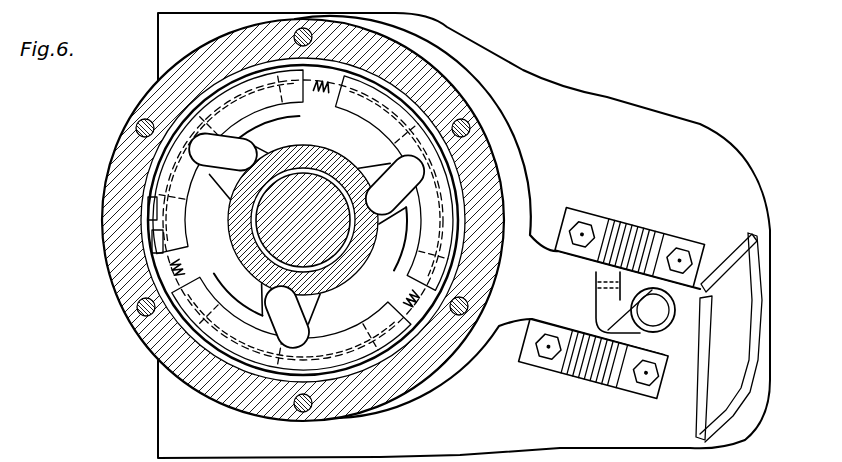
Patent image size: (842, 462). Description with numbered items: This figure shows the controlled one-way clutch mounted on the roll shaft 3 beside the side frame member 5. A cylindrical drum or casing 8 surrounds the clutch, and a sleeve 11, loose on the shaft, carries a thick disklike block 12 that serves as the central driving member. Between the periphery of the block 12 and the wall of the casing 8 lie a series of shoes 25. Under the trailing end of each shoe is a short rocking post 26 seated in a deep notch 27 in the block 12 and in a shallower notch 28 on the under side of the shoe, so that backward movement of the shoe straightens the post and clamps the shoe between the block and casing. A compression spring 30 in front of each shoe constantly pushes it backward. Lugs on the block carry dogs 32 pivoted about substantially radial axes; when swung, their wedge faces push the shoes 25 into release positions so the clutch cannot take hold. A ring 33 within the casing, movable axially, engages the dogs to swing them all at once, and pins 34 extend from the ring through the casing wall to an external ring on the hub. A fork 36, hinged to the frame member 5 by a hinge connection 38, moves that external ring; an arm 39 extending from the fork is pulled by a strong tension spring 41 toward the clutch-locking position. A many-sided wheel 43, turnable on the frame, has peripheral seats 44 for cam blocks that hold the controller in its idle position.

The roll shaft 3 is at (330, 185).
The side frame member 5 is at (523, 83).
The cylindrical drum or casing 8 is at (122, 305).
The sleeve 11 is at (262, 264).
The thick disklike block 12 is at (440, 105).
The shoes 25 is at (160, 172).
The rocking post 26 is at (222, 170).
The deep notch 27 is at (262, 150).
The shallower notch 28 is at (165, 128).
The compression spring 30 is at (290, 67).
The dogs 32 is at (215, 122).
The ring 33 is at (160, 238).
The pins 34 is at (150, 183).
The fork 36 is at (510, 163).
The hinge connection 38 is at (637, 222).
The arm 39 is at (610, 295).
The tension spring 41 is at (657, 322).
The many-sided wheel 43 is at (732, 404).
The seats 44 is at (730, 255).